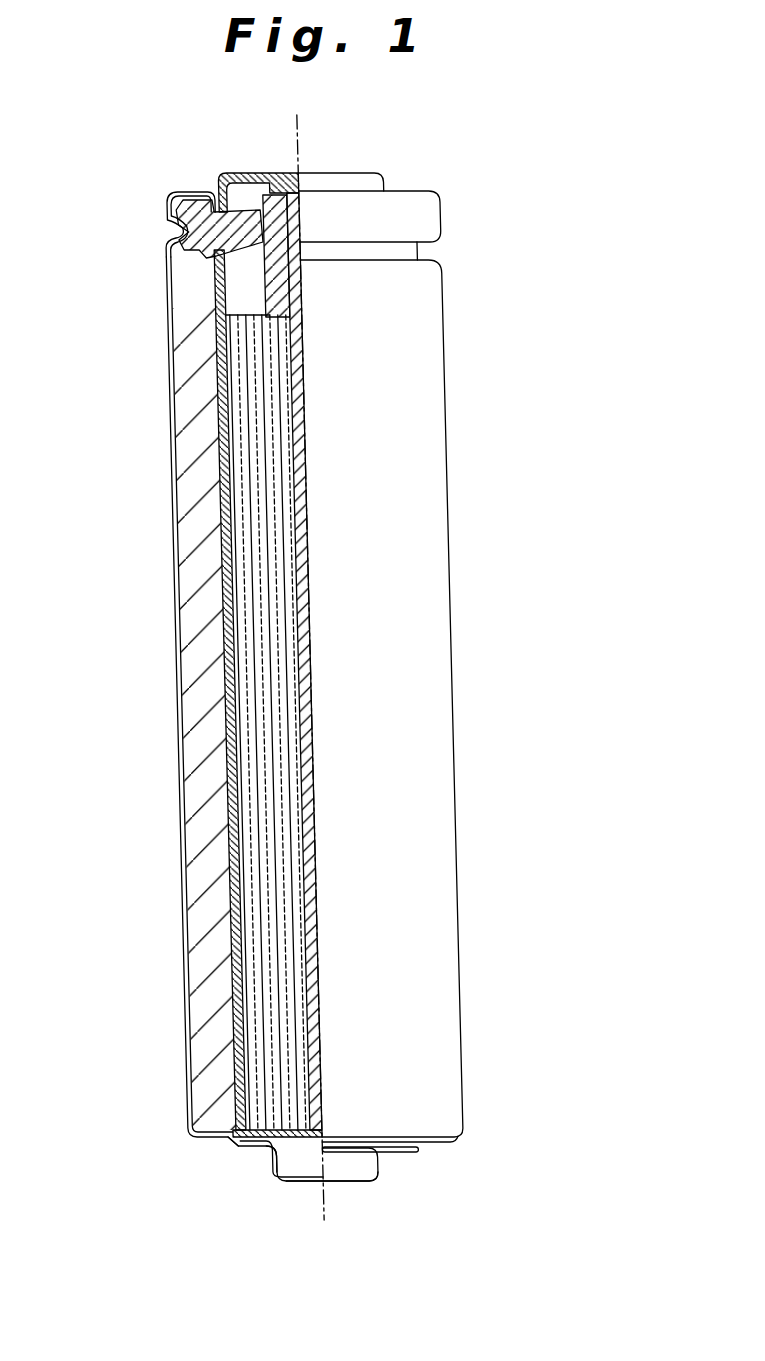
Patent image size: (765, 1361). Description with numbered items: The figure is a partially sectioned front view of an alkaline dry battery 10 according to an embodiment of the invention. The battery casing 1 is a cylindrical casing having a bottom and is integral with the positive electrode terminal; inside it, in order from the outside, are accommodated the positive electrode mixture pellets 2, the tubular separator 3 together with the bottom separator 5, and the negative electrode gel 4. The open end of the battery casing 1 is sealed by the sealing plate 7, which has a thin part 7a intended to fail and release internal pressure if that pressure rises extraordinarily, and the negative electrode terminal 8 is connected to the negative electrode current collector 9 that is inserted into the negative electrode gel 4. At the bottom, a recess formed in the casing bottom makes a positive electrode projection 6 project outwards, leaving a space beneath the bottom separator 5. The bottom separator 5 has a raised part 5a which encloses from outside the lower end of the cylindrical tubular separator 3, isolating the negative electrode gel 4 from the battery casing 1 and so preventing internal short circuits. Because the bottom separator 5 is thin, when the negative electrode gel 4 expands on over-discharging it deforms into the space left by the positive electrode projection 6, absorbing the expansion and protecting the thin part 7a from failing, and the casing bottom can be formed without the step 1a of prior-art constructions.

The battery casing 1 is at (163, 604).
The step 1a is at (200, 1147).
The positive electrode mixture pellets 2 is at (186, 770).
The tubular separator 3 is at (209, 940).
The negative electrode gel 4 is at (230, 683).
The bottom separator 5 is at (278, 1140).
The raised part 5a is at (187, 1114).
The positive electrode projection 6 is at (248, 1173).
The sealing plate 7 is at (198, 265).
The thin part 7a is at (279, 284).
The negative electrode terminal 8 is at (253, 172).
The negative electrode current collector 9 is at (281, 447).
The alkaline dry battery 10 is at (454, 377).